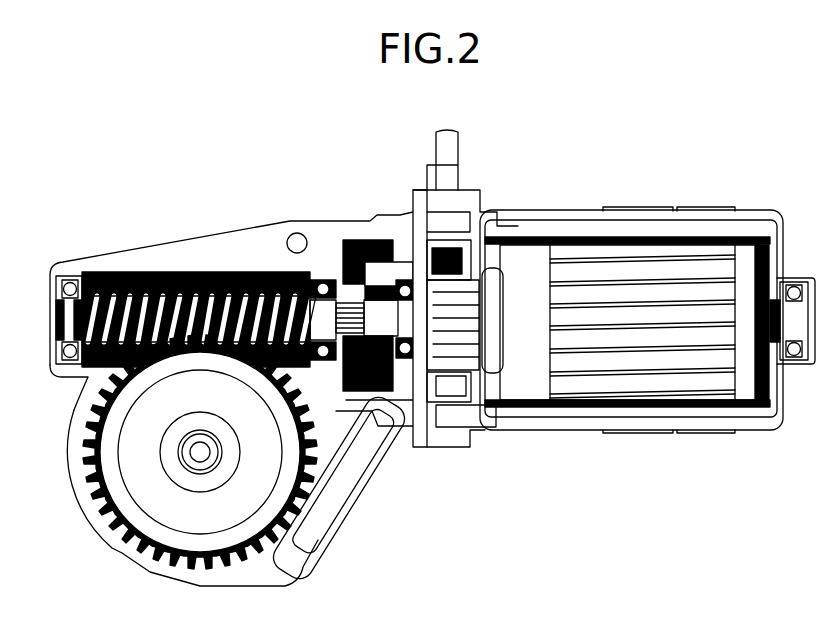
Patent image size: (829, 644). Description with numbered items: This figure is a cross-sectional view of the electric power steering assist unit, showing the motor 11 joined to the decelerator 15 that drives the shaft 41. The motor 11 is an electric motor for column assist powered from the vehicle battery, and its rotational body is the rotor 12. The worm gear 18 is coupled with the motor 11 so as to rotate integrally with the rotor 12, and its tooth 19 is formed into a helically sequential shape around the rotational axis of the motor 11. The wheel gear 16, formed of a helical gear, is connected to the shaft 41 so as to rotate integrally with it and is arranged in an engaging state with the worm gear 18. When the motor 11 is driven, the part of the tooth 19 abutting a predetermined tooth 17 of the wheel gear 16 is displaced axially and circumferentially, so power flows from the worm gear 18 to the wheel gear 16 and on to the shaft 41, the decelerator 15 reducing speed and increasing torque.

The motor 11 is at (640, 208).
The rotor 12 is at (533, 255).
The decelerator 15 is at (240, 228).
The wheel gear 16 is at (155, 533).
The tooth 17 is at (84, 462).
The worm gear 18 is at (193, 305).
The tooth 19 is at (148, 296).
The shaft 41 is at (208, 482).